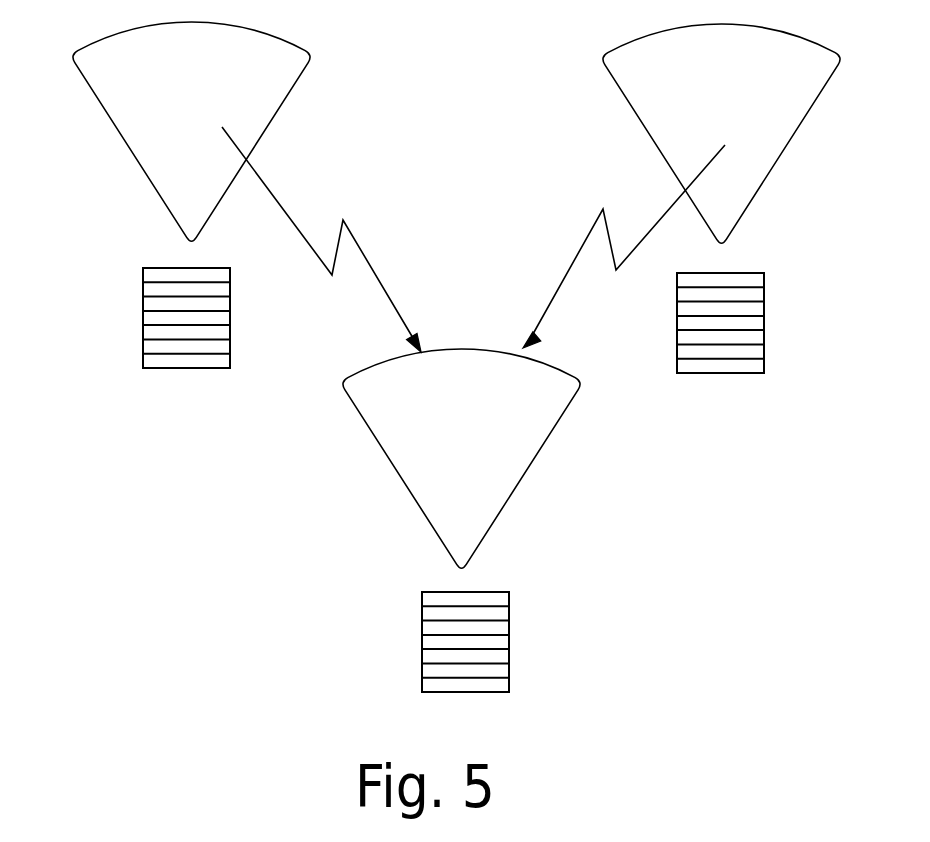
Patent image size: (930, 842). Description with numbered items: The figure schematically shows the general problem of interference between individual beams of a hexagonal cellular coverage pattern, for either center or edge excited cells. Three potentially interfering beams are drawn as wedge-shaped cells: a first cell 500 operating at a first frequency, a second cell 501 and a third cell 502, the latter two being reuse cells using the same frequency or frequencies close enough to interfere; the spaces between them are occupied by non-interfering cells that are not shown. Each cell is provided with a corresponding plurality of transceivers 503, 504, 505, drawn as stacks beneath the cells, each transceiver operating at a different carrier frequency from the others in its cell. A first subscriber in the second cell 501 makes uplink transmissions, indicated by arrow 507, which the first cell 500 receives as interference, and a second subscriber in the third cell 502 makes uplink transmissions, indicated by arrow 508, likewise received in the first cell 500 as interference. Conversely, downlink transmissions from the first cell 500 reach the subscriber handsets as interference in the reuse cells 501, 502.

The first cell 500 is at (517, 483).
The second cell 501 is at (140, 162).
The third cell 502 is at (768, 153).
The plurality of transceivers 503 is at (509, 643).
The plurality of transceivers 504 is at (143, 352).
The plurality of transceivers 505 is at (764, 340).
The arrow 507 is at (370, 262).
The arrow 508 is at (588, 240).